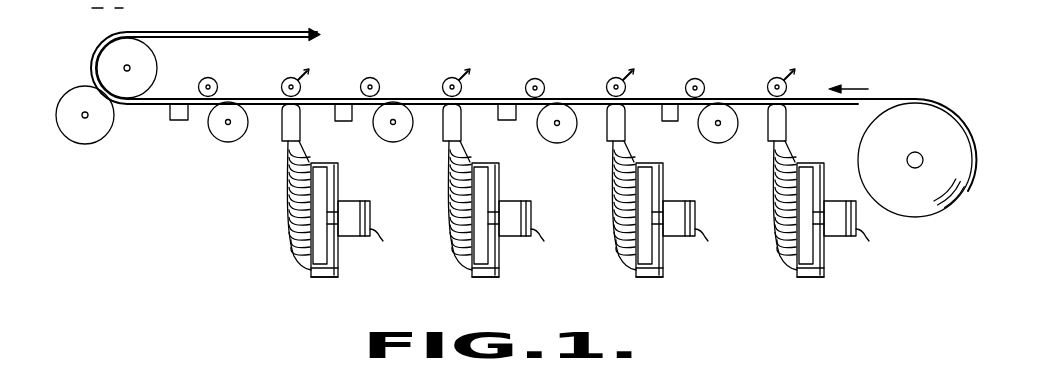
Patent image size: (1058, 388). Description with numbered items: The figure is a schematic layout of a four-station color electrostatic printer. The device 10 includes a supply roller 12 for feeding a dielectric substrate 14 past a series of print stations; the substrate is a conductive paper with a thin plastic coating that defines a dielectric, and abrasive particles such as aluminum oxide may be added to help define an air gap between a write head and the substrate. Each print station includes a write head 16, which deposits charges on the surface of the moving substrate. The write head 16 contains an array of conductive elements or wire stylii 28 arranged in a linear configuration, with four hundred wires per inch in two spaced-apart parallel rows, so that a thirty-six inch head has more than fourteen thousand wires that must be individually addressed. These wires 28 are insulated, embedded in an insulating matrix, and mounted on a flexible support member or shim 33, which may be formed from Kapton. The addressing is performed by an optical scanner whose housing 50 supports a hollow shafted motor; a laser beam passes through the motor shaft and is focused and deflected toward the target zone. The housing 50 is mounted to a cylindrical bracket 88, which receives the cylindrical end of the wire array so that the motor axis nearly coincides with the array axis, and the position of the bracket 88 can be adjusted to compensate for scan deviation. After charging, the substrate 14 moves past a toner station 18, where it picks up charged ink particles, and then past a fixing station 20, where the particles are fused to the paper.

The device 10 is at (470, 40).
The supply roller 12 is at (937, 215).
The dielectric substrate 14 is at (878, 98).
The write head 16 is at (300, 134).
The toner station 18 is at (228, 143).
The fixing station 20 is at (178, 121).
The wire stylii 28 is at (288, 231).
The shim 33 is at (306, 266).
The housing 50 is at (371, 214).
The cylindrical bracket 88 is at (340, 266).